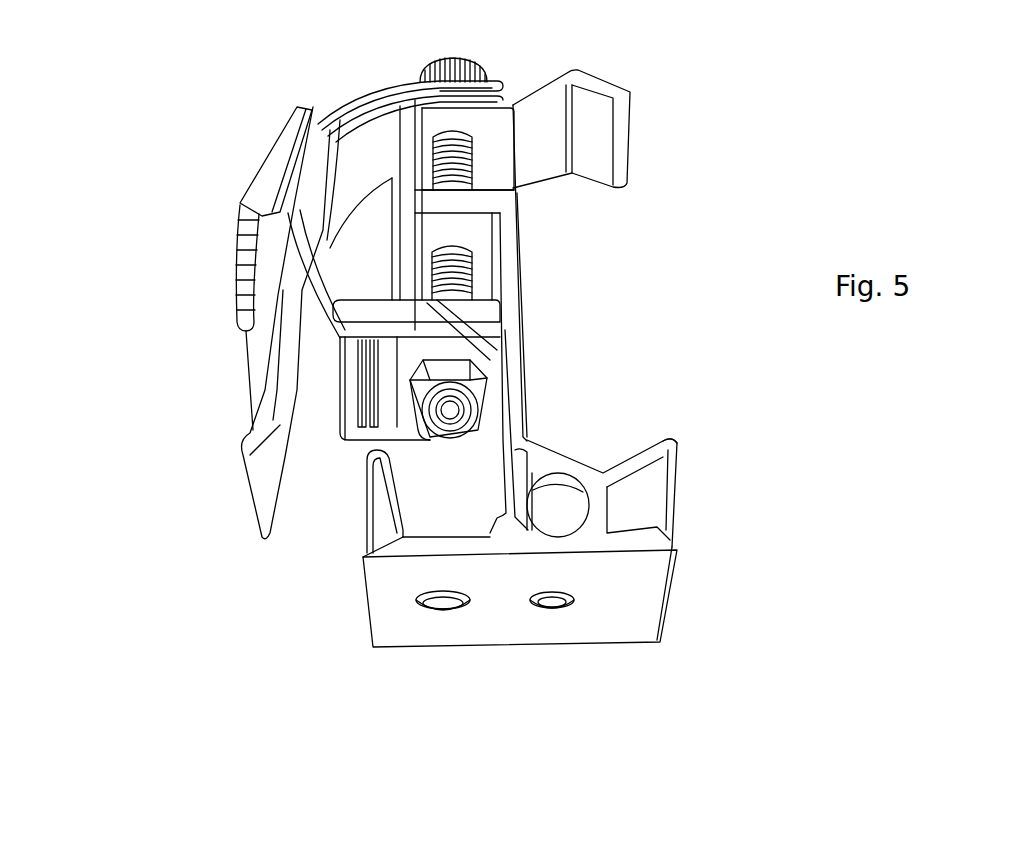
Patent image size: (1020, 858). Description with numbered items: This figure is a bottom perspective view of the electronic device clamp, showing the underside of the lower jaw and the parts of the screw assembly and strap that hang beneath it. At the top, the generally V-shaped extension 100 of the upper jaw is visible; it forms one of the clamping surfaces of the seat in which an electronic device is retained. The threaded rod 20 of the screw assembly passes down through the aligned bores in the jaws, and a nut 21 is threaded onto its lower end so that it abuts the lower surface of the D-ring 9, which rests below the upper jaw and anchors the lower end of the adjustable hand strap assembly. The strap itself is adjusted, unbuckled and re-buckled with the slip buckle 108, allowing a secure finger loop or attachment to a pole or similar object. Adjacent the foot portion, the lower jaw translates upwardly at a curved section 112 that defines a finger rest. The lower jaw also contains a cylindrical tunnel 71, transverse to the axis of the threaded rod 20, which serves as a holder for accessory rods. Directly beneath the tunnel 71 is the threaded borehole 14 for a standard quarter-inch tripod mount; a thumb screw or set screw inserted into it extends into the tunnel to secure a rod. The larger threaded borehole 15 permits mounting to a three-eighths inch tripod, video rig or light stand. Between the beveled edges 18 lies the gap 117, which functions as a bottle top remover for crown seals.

The V-shaped extension 100 is at (585, 157).
The slip buckle 108 is at (240, 203).
The D-ring 9 is at (370, 317).
The threaded rod 20 is at (468, 272).
The nut 21 is at (483, 384).
The beveled edges 18 is at (670, 440).
The cylindrical tunnel 71 is at (562, 502).
The gap 117 is at (695, 522).
The curved section 112 is at (380, 503).
The threaded borehole 15 is at (452, 640).
The threaded borehole 14 is at (551, 640).